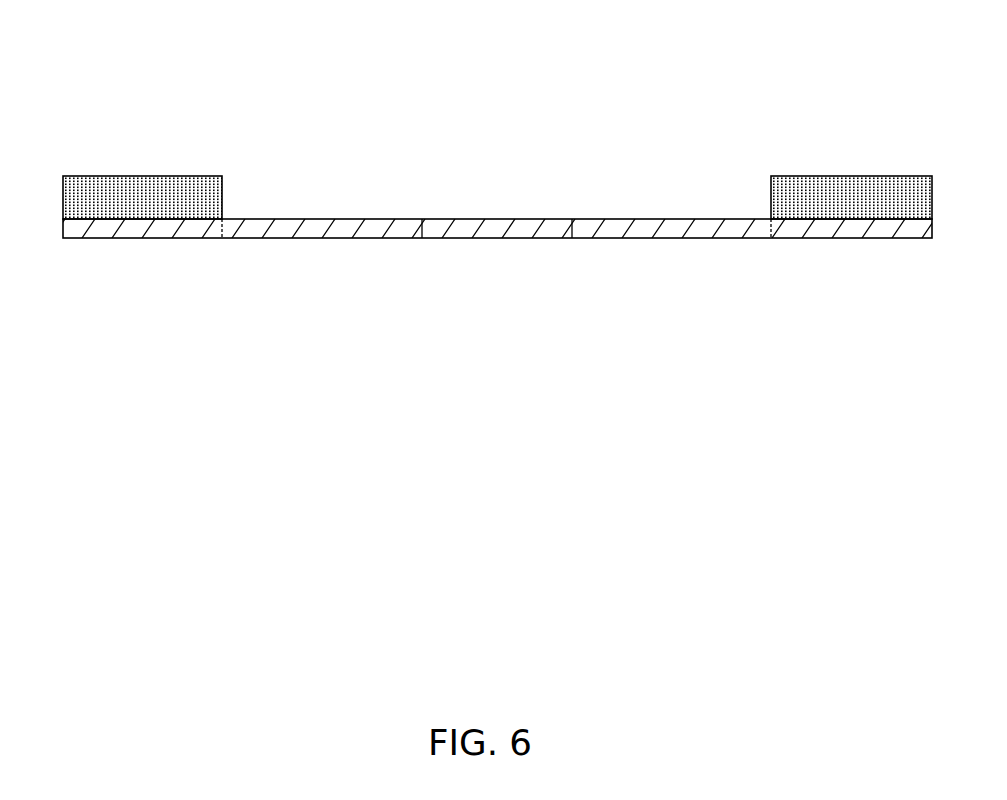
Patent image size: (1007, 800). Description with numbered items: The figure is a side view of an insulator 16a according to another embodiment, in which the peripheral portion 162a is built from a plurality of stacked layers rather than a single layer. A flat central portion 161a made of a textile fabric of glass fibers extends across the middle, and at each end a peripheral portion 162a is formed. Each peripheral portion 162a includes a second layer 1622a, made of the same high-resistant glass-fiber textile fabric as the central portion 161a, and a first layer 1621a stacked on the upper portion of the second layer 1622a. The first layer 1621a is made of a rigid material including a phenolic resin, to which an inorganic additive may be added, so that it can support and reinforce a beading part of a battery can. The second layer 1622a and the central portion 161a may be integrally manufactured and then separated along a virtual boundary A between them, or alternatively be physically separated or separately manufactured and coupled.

The insulator 16a is at (504, 84).
The central portion 161a is at (488, 238).
The peripheral portion 162a is at (131, 266).
The first layer 1621a is at (80, 202).
The second layer 1622a is at (172, 266).
The virtual boundary A is at (222, 240).